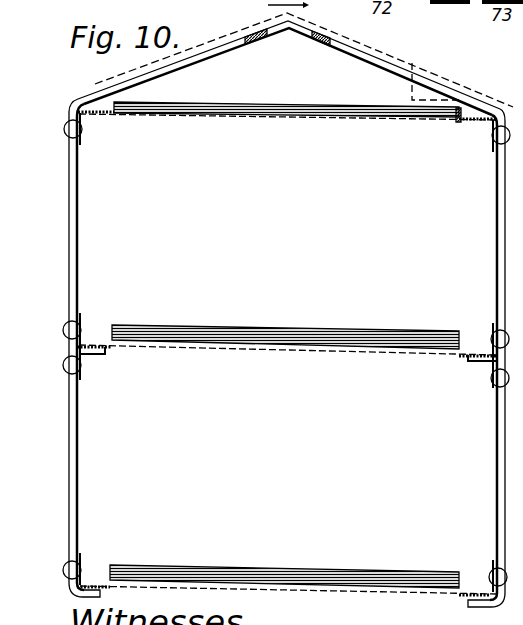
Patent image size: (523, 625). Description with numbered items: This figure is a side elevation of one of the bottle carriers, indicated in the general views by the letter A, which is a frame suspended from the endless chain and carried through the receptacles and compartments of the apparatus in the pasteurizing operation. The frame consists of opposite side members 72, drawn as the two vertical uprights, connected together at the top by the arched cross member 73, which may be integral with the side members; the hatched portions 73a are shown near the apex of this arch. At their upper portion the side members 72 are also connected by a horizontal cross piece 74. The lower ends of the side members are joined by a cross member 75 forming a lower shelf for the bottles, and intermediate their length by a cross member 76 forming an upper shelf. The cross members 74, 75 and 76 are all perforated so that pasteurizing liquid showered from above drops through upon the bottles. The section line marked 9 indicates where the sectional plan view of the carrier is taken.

The section line 9- 9 is at (93, 90).
The side members 72 is at (77, 455).
The arched cross member 73 is at (373, 61).
The roof joint hatched portions 73a is at (281, 31).
The horizontal cross piece 74 is at (403, 119).
The cross member 75 is at (327, 589).
The cross member 76 is at (303, 350).
The carrier A is at (442, 262).